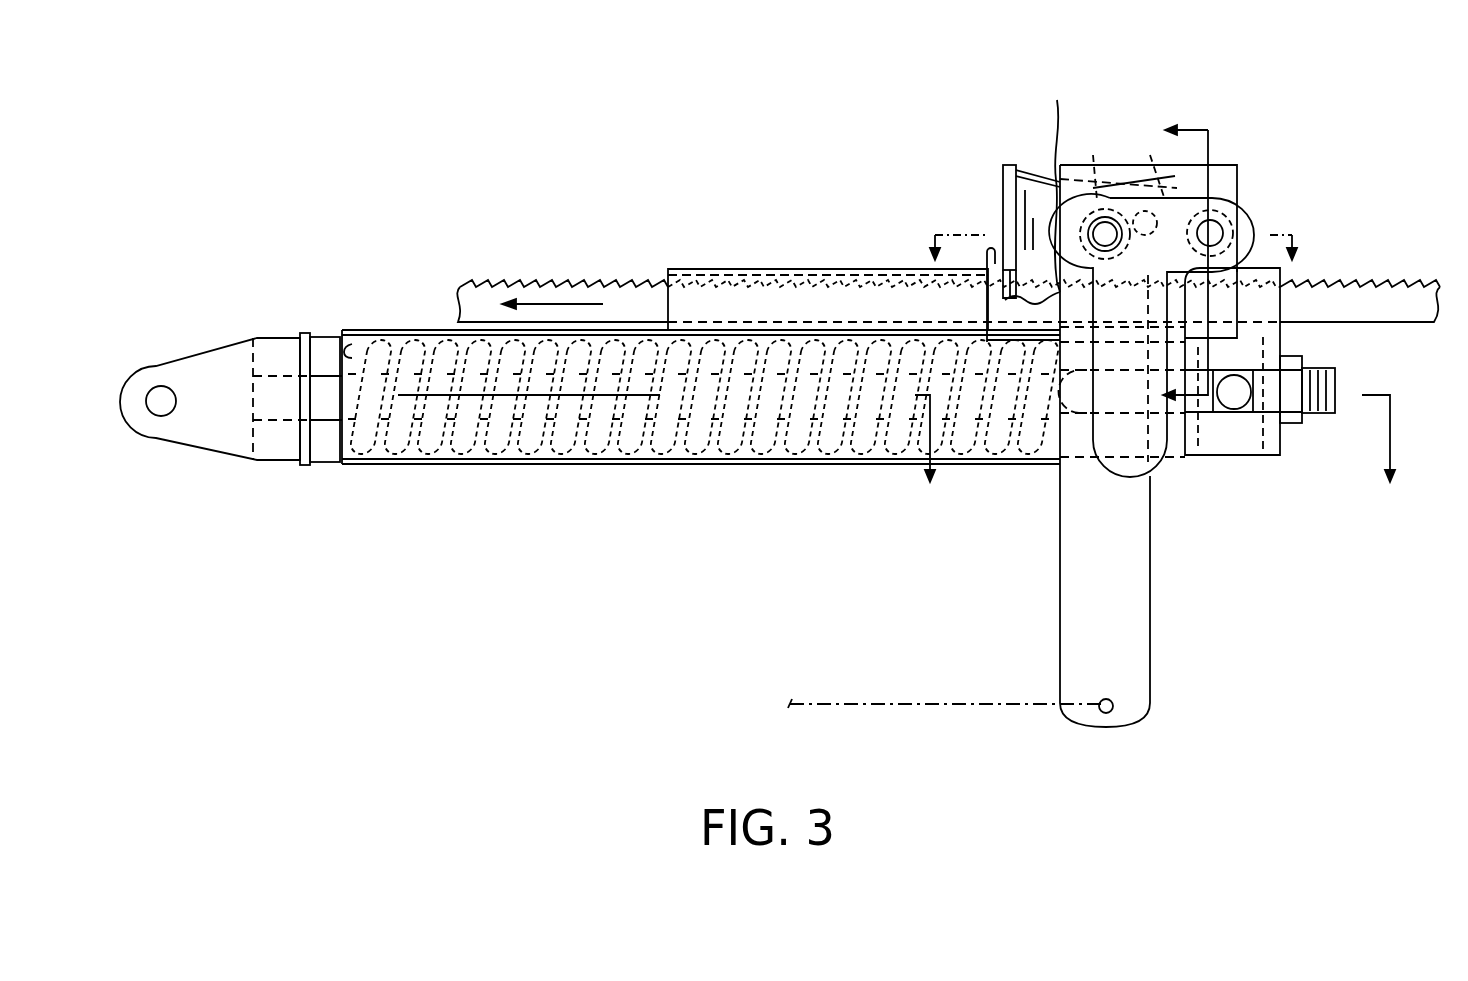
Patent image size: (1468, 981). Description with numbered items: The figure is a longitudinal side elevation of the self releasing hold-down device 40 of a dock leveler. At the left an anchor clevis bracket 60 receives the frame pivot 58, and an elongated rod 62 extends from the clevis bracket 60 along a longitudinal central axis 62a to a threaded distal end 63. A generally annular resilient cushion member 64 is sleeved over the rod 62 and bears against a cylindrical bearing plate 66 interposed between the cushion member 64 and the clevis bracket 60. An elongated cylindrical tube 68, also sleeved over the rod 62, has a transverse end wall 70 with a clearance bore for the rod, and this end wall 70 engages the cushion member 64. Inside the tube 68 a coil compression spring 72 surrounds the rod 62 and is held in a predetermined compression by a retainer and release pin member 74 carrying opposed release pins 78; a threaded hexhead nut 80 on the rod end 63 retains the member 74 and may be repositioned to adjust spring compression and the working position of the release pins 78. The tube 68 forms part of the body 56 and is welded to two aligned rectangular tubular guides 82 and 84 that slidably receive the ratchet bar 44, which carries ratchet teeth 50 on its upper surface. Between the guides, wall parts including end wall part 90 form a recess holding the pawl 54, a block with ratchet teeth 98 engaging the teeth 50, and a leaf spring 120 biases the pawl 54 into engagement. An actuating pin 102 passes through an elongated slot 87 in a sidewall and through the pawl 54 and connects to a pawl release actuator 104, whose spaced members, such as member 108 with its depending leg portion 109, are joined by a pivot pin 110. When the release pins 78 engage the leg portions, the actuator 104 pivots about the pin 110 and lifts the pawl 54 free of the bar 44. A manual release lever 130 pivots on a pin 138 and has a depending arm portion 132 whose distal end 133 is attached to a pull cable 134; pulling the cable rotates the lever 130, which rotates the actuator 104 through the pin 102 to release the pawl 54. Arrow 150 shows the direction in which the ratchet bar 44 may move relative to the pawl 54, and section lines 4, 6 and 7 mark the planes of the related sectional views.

The hold-down device 40 is at (733, 222).
The elongated bar 44 is at (1434, 308).
The ratchet teeth 50 is at (492, 282).
The pawl 54 is at (1040, 205).
The body 56 is at (1030, 158).
The pivot 58 is at (160, 416).
The clevis bracket 60 is at (225, 455).
The elongated rod 62 is at (323, 400).
The longitudinal central axis 62a is at (533, 398).
The threaded distal end 63 is at (1327, 414).
The resilient cushion member 64 is at (328, 336).
The cylindrical bearing plate 66 is at (312, 338).
The elongated cylindrical tube 68 is at (457, 470).
The transverse end wall 70 is at (346, 350).
The coil compression spring 72 is at (603, 450).
The retainer and release pin member 74 is at (1273, 408).
The release pins 78 is at (1233, 402).
The threaded hexhead nut 80 is at (1300, 350).
The tubular guide 82 is at (832, 269).
The tubular guide 84 is at (1258, 266).
The elongated slot 87 is at (1103, 215).
The end wall part 90 is at (1003, 192).
The ratchet teeth 98 is at (1005, 290).
The actuating pin 102 is at (1118, 242).
The pawl release actuator 104 is at (1235, 178).
The member 108 is at (1242, 212).
The depending leg portion 109 is at (1131, 483).
The pivot pin 110 is at (1238, 210).
The leaf spring 120 is at (1050, 181).
The release lever 130 is at (1050, 630).
The depending arm portion 132 is at (1152, 598).
The distal end 133 is at (1112, 710).
The pull cable 134 is at (950, 705).
The pin 138 is at (1148, 185).
The arrow 150 is at (573, 300).
The section line 4- 4 is at (1156, 454).
The section line 6- 6 is at (1179, 262).
The section line 7- 7 is at (1113, 251).